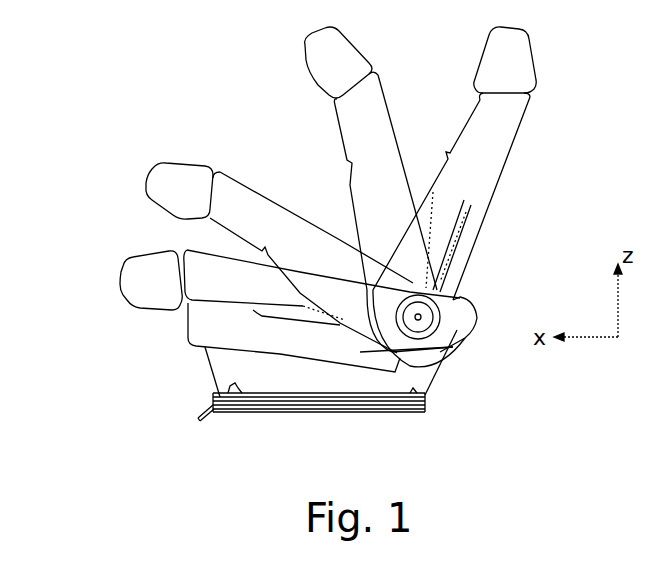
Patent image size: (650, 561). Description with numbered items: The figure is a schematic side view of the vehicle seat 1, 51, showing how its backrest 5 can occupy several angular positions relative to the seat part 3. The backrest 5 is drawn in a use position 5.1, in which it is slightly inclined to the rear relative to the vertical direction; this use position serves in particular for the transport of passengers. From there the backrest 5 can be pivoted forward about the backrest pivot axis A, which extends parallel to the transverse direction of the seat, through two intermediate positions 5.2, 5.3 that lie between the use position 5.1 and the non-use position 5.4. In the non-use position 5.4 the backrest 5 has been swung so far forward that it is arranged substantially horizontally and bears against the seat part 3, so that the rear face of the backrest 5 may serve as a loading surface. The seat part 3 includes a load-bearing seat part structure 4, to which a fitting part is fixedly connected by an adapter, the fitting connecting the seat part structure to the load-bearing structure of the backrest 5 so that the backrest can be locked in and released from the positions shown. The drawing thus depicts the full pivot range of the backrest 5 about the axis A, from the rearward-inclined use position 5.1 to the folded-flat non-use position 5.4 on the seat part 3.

The vehicle seat 1 is at (127, 77).
The vehicle seat 51 is at (118, 71).
The seat part 3 is at (197, 326).
The load-bearing seat part structure 4 is at (221, 367).
The backrest 5 is at (507, 132).
The use position 5.1 is at (465, 220).
The intermediate position 5.2 is at (383, 203).
The intermediate position 5.3 is at (333, 262).
The non-use position 5.4 is at (400, 180).
The backrest pivot axis A is at (463, 347).